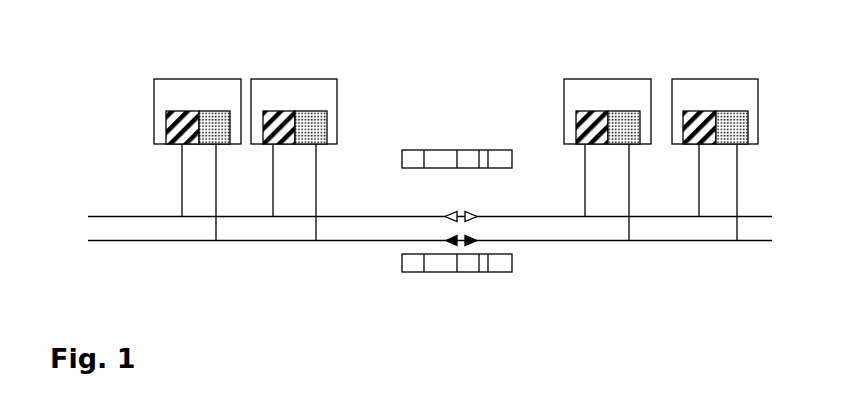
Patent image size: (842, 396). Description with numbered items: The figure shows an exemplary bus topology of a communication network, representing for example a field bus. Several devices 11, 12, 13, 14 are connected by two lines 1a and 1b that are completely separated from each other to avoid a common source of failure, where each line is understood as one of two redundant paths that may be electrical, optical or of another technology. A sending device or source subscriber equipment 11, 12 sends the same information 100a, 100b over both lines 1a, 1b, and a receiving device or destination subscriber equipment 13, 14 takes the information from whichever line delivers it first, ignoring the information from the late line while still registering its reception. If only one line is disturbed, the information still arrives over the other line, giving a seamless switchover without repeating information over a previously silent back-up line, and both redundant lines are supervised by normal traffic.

The line 1a is at (143, 212).
The line 1b is at (148, 250).
The sending device 11 is at (197, 78).
The sending device 12 is at (292, 78).
The receiving device 13 is at (605, 78).
The receiving device 14 is at (713, 78).
The information 100a is at (457, 186).
The information 100b is at (457, 275).